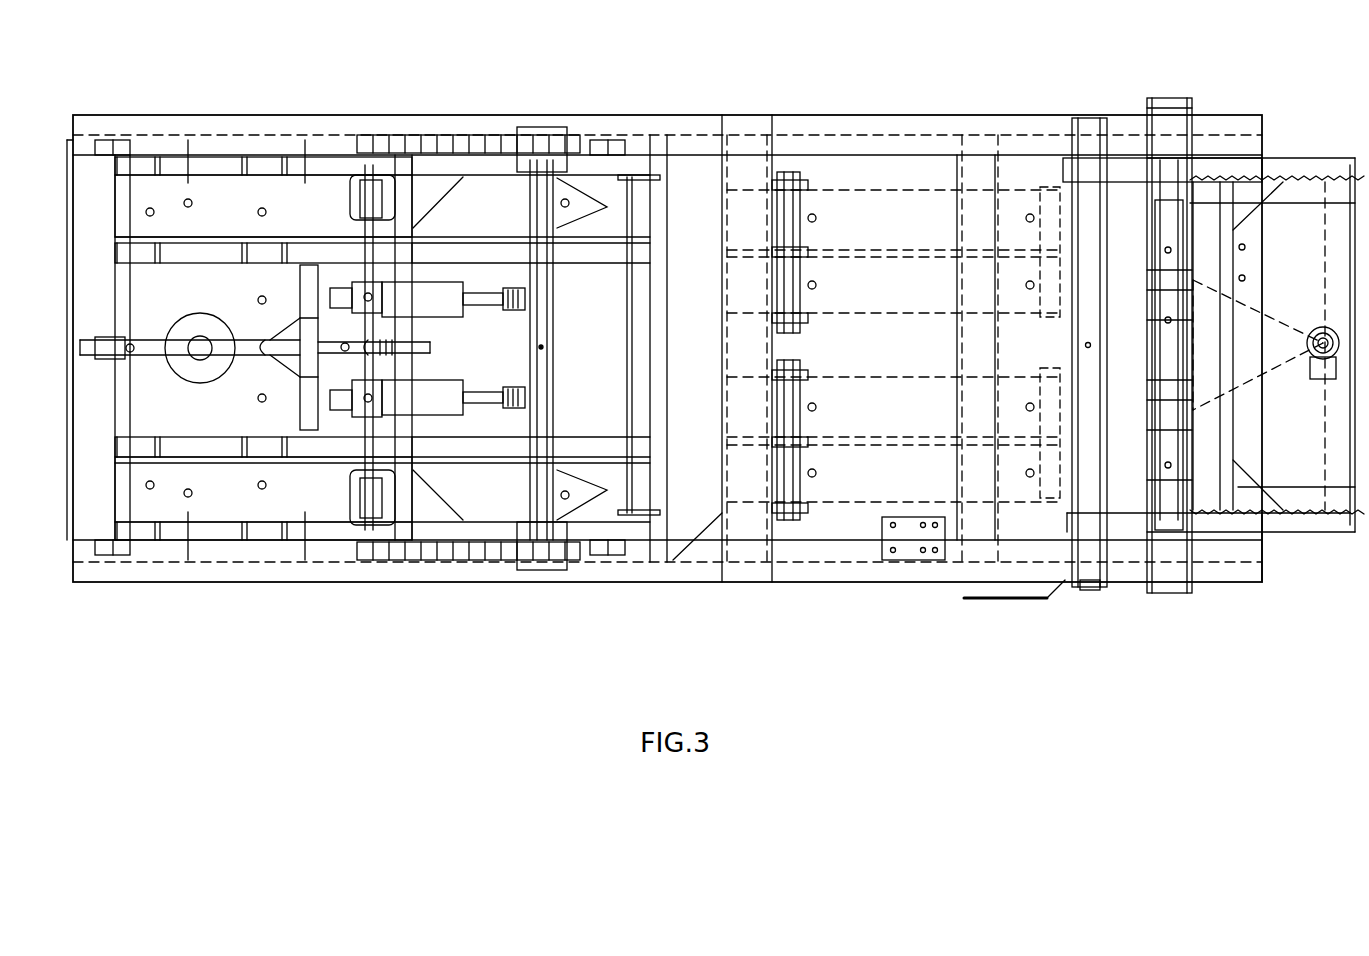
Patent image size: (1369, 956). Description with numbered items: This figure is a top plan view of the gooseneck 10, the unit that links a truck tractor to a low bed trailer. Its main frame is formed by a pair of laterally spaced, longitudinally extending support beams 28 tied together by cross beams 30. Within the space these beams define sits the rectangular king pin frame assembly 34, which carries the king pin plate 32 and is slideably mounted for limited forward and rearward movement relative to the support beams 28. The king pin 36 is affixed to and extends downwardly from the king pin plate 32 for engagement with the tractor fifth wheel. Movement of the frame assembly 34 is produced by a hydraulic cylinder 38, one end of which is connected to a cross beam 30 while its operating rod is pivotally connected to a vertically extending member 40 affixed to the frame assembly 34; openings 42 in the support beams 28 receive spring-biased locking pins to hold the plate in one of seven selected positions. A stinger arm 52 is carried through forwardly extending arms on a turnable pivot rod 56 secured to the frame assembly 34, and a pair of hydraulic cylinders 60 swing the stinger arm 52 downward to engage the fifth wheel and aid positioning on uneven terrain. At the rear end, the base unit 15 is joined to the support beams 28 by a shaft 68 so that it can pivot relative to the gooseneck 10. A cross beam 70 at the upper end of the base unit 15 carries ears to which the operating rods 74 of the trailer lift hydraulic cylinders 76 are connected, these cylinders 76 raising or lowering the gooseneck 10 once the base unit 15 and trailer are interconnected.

The gooseneck 10 is at (298, 612).
The base unit 15 is at (1313, 545).
The support beams 28 is at (762, 115).
The cross beams 30 is at (67, 540).
The king pin plate 32 is at (240, 292).
The king pin frame assembly 34 is at (298, 400).
The king pin 36 is at (190, 362).
The hydraulic cylinder 38 is at (148, 333).
The vertically extending member 40 is at (415, 352).
The openings 42 is at (497, 138).
The stinger arm 52 is at (637, 322).
The pivot rod 56 is at (555, 358).
The hydraulic cylinders 60 is at (443, 292).
The shaft 68 is at (1170, 598).
The cross beam 70 is at (1240, 200).
The operating rods 74 is at (1045, 190).
The trailer lift hydraulic cylinders 76 is at (908, 212).